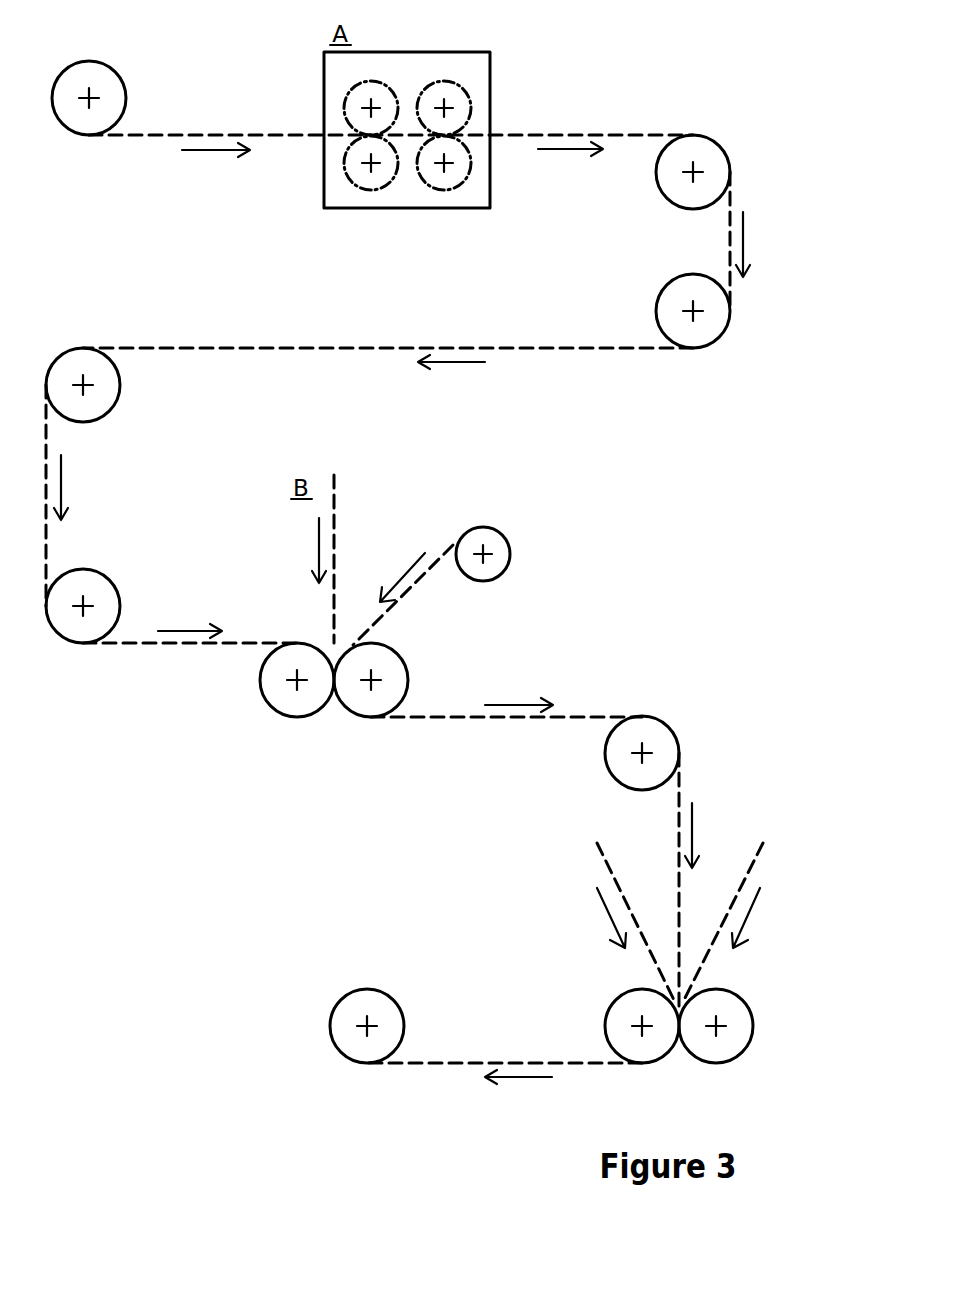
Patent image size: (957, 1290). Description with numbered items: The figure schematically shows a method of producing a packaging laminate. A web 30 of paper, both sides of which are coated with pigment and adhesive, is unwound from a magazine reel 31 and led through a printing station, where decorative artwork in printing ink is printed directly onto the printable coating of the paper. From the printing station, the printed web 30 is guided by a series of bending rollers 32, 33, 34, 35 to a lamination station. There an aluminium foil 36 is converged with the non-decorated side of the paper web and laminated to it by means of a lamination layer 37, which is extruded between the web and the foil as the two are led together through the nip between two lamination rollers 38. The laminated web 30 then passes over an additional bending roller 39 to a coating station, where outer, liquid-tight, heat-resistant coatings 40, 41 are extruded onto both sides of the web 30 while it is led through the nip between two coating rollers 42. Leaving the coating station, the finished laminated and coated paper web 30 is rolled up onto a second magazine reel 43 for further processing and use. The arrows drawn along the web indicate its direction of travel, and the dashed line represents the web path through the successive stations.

The web 30 is at (163, 135).
The magazine reel 31 is at (91, 70).
The bending roller 32 is at (675, 190).
The bending roller 33 is at (673, 292).
The bending roller 34 is at (111, 393).
The bending roller 35 is at (109, 584).
The aluminium foil 36 is at (427, 573).
The lamination layer 37 is at (336, 509).
The lamination rollers 38 is at (265, 692).
The additional bending roller 39 is at (618, 771).
The coating 40 is at (606, 869).
The coating 41 is at (753, 869).
The coating rollers 42 is at (629, 1001).
The magazine reel 43 is at (370, 998).